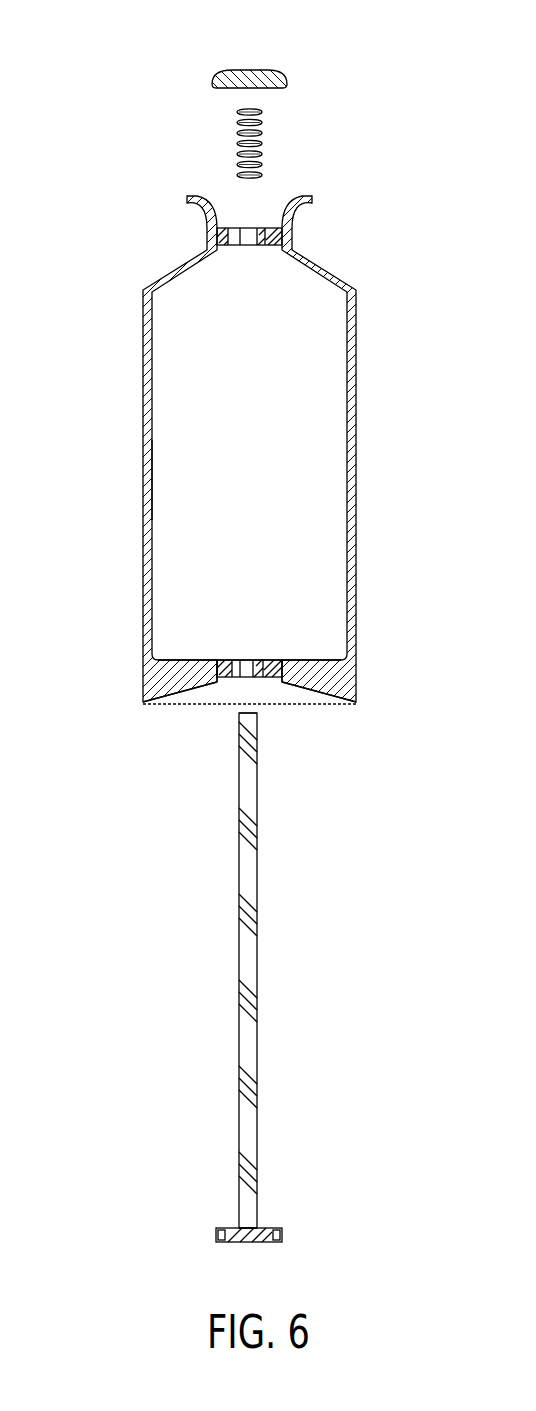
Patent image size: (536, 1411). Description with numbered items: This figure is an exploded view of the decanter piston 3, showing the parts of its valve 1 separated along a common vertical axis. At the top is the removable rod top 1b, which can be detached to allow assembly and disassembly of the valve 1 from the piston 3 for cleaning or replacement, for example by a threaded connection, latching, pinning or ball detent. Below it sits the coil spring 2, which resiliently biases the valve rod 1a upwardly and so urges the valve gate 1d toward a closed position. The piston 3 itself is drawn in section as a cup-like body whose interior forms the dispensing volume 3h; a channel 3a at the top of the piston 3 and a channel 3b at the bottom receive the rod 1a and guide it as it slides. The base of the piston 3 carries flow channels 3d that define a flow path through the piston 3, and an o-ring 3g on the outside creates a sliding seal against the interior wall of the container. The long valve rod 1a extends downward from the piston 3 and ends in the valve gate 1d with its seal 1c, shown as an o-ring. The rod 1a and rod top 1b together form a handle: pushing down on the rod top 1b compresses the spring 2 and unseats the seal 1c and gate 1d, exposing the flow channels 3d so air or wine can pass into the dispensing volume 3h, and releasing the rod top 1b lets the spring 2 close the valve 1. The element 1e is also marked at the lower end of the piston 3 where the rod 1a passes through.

The valve 1 is at (289, 642).
The valve rod 1a is at (258, 1033).
The rod top 1b is at (282, 74).
The seal 1c is at (283, 1236).
The valve gate 1d is at (262, 1232).
The rod tip 1e is at (281, 683).
The spring 2 is at (262, 145).
The piston 3 is at (357, 457).
The channel 3a is at (247, 247).
The channel 3b is at (248, 662).
The flow channels 3d is at (227, 672).
The o-rings 3g is at (143, 702).
The dispensing volume 3h is at (166, 481).